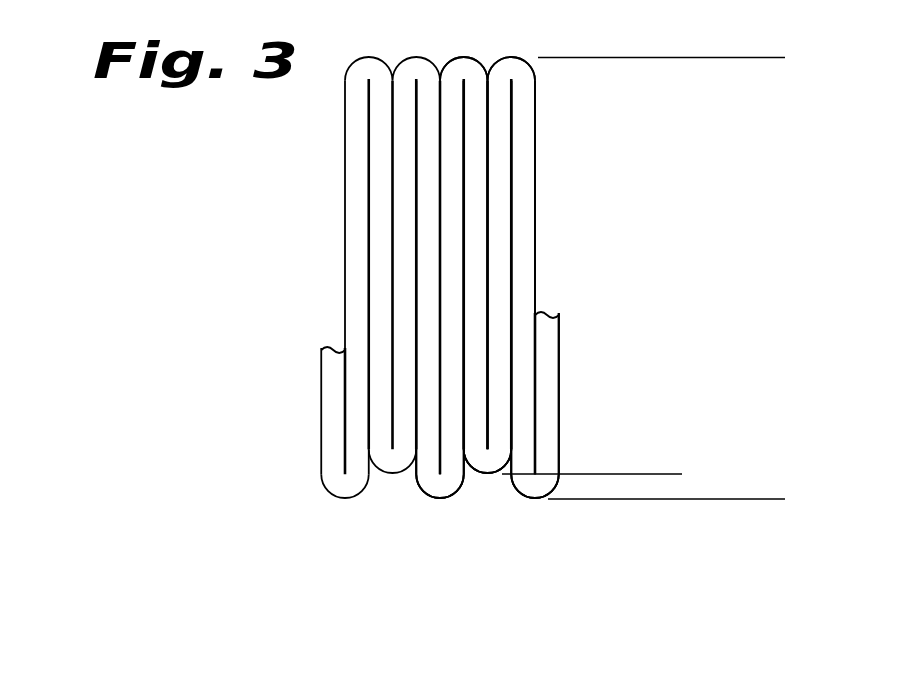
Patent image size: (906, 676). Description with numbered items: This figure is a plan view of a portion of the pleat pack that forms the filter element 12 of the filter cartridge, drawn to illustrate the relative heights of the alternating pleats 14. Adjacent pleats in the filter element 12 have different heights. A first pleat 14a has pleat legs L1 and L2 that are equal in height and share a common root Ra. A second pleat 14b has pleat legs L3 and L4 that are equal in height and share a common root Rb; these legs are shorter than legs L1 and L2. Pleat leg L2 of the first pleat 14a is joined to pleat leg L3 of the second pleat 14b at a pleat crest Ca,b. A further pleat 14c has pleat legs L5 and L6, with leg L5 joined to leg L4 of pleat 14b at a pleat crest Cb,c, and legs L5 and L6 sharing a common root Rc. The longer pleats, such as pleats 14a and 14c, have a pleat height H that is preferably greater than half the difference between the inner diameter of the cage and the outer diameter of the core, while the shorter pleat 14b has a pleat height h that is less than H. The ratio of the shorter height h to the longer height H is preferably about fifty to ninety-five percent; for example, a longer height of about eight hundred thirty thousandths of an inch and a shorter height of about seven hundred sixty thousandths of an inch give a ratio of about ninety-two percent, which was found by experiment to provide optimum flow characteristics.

The filter element 12 is at (272, 417).
The pleats 14 is at (523, 675).
The first pleat 14a is at (440, 432).
The second pleat 14b is at (488, 432).
The pleat 14c is at (537, 427).
The pleat leg L1 is at (428, 232).
The pleat leg L2 is at (455, 265).
The pleat leg L3 is at (478, 310).
The pleat leg L4 is at (497, 242).
The pleat leg L5 is at (522, 265).
The pleat leg L6 is at (547, 333).
The common root Ra is at (435, 495).
The common root Rb is at (493, 473).
The common root Rc is at (541, 500).
The pleat crest Ca,b is at (463, 57).
The pleat crest Cb,c is at (512, 58).
The height of the shorter pleats h is at (659, 60).
The height of the longer pleats H is at (744, 60).